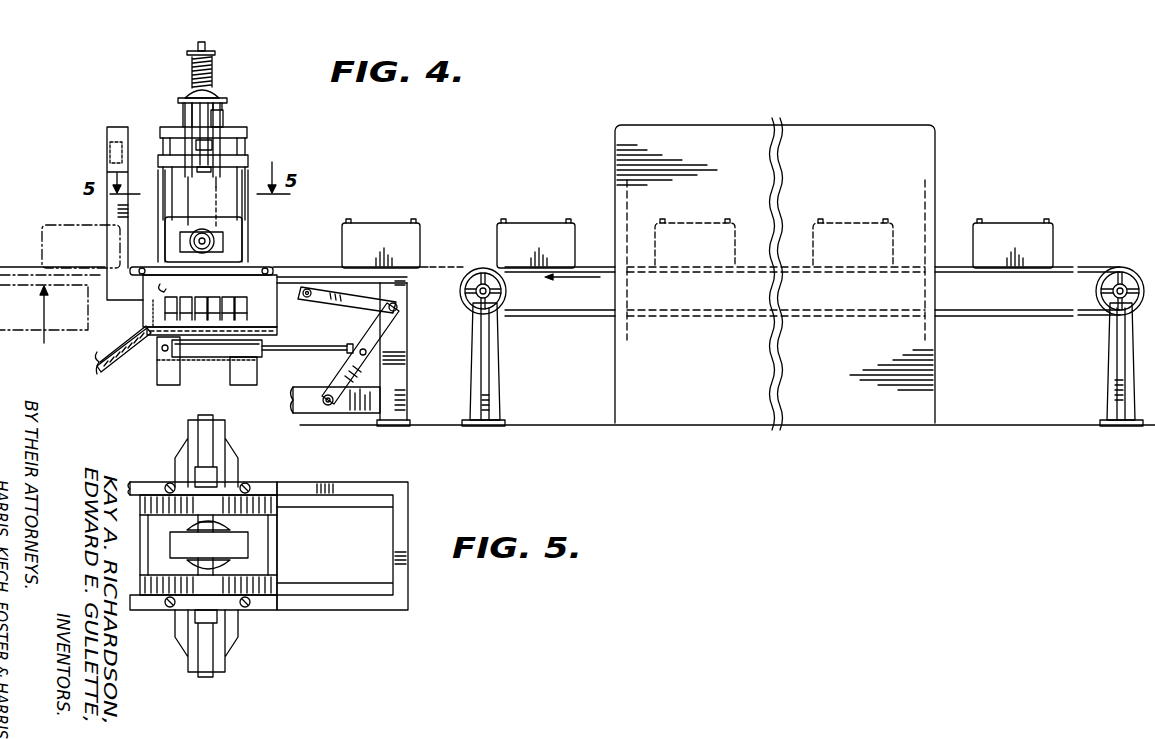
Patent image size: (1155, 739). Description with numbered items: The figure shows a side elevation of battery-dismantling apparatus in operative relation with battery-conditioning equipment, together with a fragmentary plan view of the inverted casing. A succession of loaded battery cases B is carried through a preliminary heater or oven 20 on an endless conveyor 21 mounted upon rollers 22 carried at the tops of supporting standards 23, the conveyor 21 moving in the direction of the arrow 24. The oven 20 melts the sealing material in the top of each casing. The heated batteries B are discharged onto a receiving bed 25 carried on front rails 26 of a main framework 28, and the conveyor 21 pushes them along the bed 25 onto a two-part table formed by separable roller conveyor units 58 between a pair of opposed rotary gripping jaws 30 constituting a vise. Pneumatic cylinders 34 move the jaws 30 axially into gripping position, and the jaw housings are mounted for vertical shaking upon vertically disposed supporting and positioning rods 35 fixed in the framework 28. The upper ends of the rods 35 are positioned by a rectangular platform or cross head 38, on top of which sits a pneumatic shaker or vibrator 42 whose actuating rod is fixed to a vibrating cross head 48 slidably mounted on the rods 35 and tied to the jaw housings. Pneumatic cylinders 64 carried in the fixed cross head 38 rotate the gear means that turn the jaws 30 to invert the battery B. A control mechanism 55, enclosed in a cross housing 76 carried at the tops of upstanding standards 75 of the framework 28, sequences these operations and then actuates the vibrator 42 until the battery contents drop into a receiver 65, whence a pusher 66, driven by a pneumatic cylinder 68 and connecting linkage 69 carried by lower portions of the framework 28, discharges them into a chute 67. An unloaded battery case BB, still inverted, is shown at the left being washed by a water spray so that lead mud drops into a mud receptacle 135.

In FIG. 4, the preliminary heater or oven 20 is at (890, 100).
In FIG. 4, the endless conveyor 21 is at (540, 314).
In FIG. 4, the rollers 22 is at (505, 293).
In FIG. 4, the supporting standards 23 is at (494, 383).
In FIG. 4, the arrow 24 is at (563, 278).
In FIG. 4, the receiving bed 25 is at (455, 250).
In FIG. 4, the front rails 26 is at (404, 290).
In FIG. 4, the main framework 28 is at (406, 362).
In FIG. 5, the main framework 28 is at (361, 483).
In FIG. 4, the rotary gripping jaws 30 is at (223, 243).
In FIG. 5, the rotary gripping jaws 30 is at (228, 525).
In FIG. 5, the pneumatic cylinders 34 is at (213, 437).
In FIG. 4, the supporting and positioning rods 35 is at (245, 208).
In FIG. 5, the supporting and positioning rods 35 is at (248, 486).
In FIG. 4, the cross head 38 is at (163, 127).
In FIG. 4, the pneumatic shaker or vibrator 42 is at (96, 75).
In FIG. 4, the vibrating cross head 48 is at (232, 161).
In FIG. 4, the control mechanism 55 is at (108, 152).
In FIG. 5, the separable roller conveyor units 58 is at (152, 497).
In FIG. 4, the pneumatic cylinders 64 is at (223, 120).
In FIG. 4, the receiver 65 is at (148, 324).
In FIG. 4, the pusher 66 is at (290, 306).
In FIG. 4, the chute 67 is at (98, 362).
In FIG. 4, the pneumatic cylinder 68 is at (210, 358).
In FIG. 4, the connecting linkage 69 is at (338, 372).
In FIG. 4, the upstanding standards 75 is at (118, 211).
In FIG. 4, the cross housing 76 is at (107, 130).
In FIG. 4, the mud receptacle 135 is at (20, 332).
In FIG. 4, the battery B is at (243, 231).
In FIG. 5, the battery B is at (243, 545).
In FIG. 4, the unloaded battery case BB is at (60, 241).